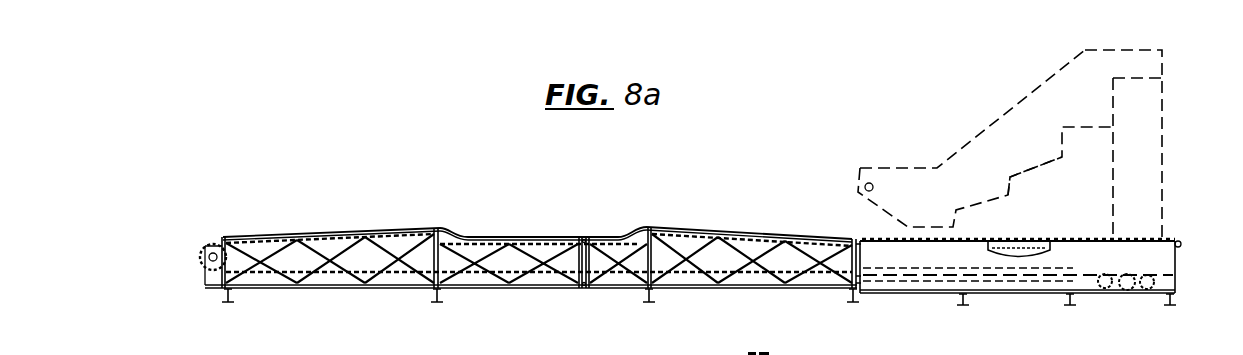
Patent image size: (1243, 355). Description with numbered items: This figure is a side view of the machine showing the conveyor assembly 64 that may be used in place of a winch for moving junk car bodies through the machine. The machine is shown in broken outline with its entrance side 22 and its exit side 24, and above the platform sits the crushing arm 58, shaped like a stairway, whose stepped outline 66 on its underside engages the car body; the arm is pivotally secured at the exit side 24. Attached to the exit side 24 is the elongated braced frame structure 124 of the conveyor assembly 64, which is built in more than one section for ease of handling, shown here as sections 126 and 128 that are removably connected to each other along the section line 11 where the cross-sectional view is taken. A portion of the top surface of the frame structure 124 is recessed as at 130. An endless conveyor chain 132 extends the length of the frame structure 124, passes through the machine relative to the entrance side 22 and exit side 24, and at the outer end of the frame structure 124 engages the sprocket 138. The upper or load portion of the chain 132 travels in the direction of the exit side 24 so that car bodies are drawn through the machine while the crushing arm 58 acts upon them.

The section line 11- 11 is at (581, 222).
The entrance side 22 is at (1174, 68).
The exit side 24 is at (844, 216).
The crushing arm 58 is at (978, 134).
The conveyor assembly 64 is at (712, 220).
The stepped outline 66 is at (1035, 176).
The elongated braced frame structure 124 is at (459, 216).
The first frame section 126 is at (325, 232).
The second frame section 128 is at (660, 225).
The recessed top surface section 130 is at (501, 231).
The endless conveyor chain 132 is at (290, 277).
The sprocket 138 is at (202, 263).